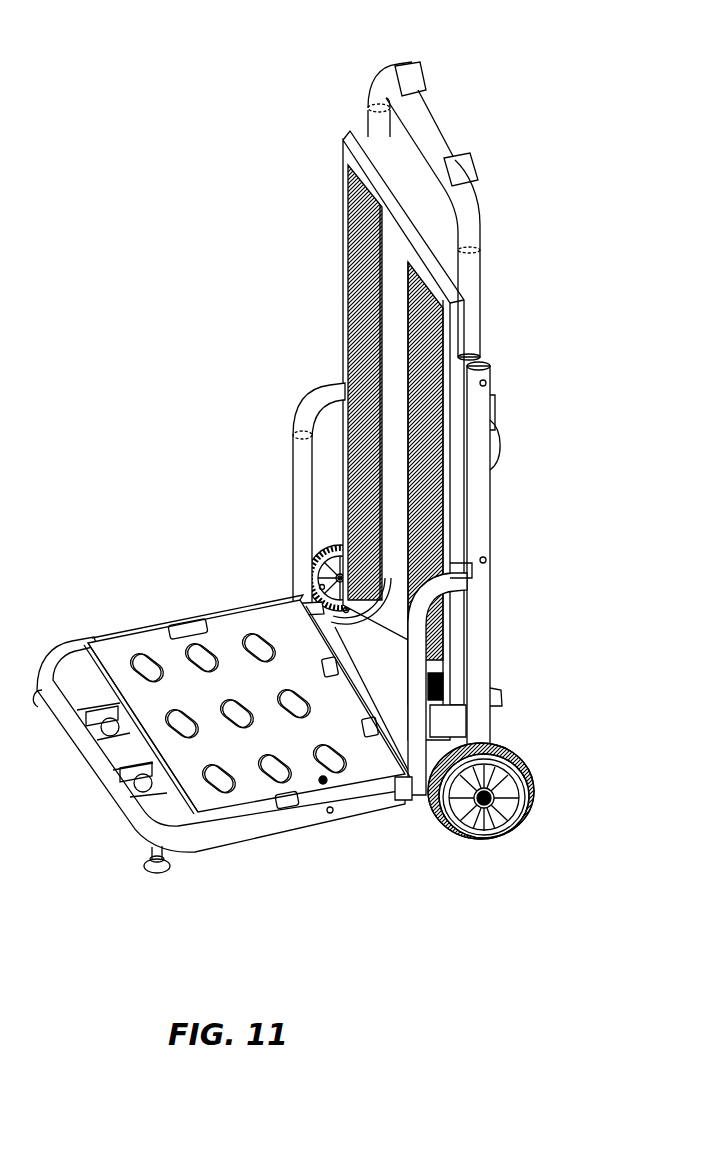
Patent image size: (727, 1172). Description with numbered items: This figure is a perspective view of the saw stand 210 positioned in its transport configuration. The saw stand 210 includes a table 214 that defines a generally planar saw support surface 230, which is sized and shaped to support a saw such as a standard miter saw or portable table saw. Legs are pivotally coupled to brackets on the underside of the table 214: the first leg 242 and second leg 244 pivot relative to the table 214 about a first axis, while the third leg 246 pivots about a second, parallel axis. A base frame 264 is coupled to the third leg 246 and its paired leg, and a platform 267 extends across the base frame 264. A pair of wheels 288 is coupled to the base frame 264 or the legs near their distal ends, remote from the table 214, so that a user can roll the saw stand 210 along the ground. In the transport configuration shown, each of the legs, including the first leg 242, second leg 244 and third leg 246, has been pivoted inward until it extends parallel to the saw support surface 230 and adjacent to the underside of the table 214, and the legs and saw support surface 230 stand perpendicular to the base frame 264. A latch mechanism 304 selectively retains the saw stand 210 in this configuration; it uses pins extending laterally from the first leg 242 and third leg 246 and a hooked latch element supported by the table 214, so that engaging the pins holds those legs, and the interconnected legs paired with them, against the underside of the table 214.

The saw stand 210 is at (128, 215).
The table 214 is at (330, 220).
The saw support surface 230 is at (398, 330).
The first leg 242 is at (478, 282).
The second leg 244 is at (368, 124).
The third leg 246 is at (490, 627).
The base frame 264 is at (285, 845).
The platform 267 is at (163, 657).
The wheels 288 is at (512, 835).
The latch mechanism 304 is at (535, 692).